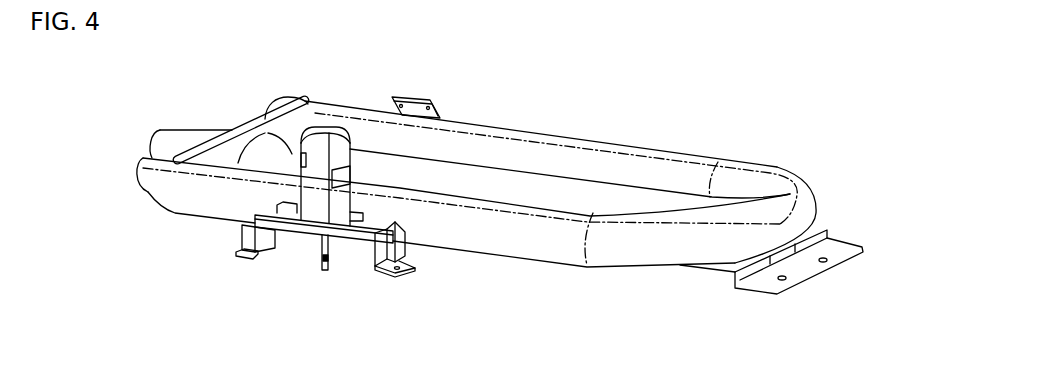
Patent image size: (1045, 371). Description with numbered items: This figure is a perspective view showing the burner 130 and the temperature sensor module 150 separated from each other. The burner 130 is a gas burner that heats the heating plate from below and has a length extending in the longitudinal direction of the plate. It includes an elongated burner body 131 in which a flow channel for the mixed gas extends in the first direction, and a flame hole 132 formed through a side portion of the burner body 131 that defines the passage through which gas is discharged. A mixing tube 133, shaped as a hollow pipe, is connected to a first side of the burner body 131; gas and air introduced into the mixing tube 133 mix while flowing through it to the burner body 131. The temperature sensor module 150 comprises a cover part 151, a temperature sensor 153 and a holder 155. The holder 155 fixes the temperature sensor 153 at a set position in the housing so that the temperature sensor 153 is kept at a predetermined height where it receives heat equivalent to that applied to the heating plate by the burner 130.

The burner 130 is at (802, 153).
The burner body 131 is at (530, 158).
The flame hole 132 is at (663, 158).
The mixing tube 133 is at (290, 157).
The temperature sensor module 150 is at (243, 260).
The cover part 151 is at (277, 190).
The temperature sensor 153 is at (320, 238).
The holder 155 is at (357, 234).